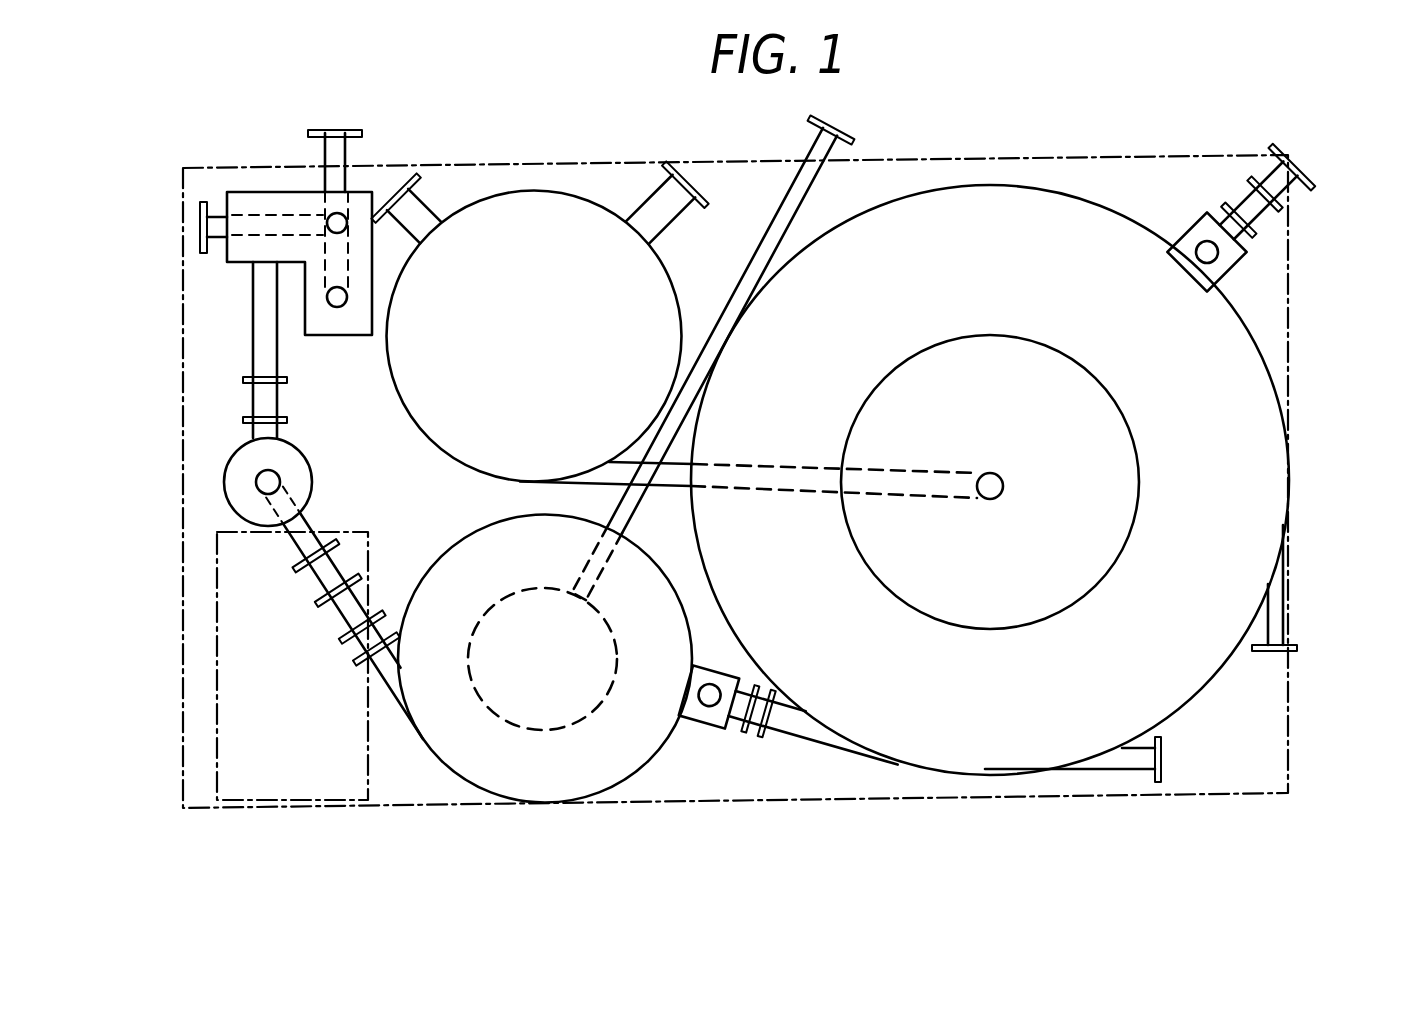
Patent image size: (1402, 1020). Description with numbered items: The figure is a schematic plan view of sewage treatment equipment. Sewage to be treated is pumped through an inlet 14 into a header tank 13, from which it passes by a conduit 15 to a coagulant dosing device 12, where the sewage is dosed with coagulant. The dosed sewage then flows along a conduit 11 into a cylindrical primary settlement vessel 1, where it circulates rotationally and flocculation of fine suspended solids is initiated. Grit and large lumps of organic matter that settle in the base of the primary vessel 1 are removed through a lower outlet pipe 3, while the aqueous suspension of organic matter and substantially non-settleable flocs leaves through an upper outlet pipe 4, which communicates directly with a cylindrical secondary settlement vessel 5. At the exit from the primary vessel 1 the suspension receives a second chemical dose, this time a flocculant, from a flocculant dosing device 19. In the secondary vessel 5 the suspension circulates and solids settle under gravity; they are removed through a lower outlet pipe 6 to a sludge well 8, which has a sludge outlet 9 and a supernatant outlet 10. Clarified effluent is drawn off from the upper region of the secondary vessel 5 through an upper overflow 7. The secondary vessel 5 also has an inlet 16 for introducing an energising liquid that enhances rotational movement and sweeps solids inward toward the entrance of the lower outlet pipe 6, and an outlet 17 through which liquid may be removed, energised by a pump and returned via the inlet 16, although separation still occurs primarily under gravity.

The primary settlement vessel 1 is at (448, 772).
The lower outlet pipe 3 is at (762, 227).
The upper outlet pipe 4 is at (733, 713).
The secondary settlement vessel 5 is at (995, 733).
The lower outlet pipe 6 is at (775, 462).
The upper overflow 7 is at (1217, 220).
The sludge well 8 is at (533, 191).
The sludge outlet 9 is at (425, 207).
The supernatant outlet 10 is at (643, 198).
The conduit 11 is at (288, 543).
The coagulant dosing device 12 is at (223, 472).
The header tank 13 is at (265, 195).
The inlet 14 is at (198, 227).
The conduit 15 is at (263, 308).
The inlet 16 is at (1273, 627).
The outlet 17 is at (1138, 760).
The flocculant dosing device 19 is at (707, 715).